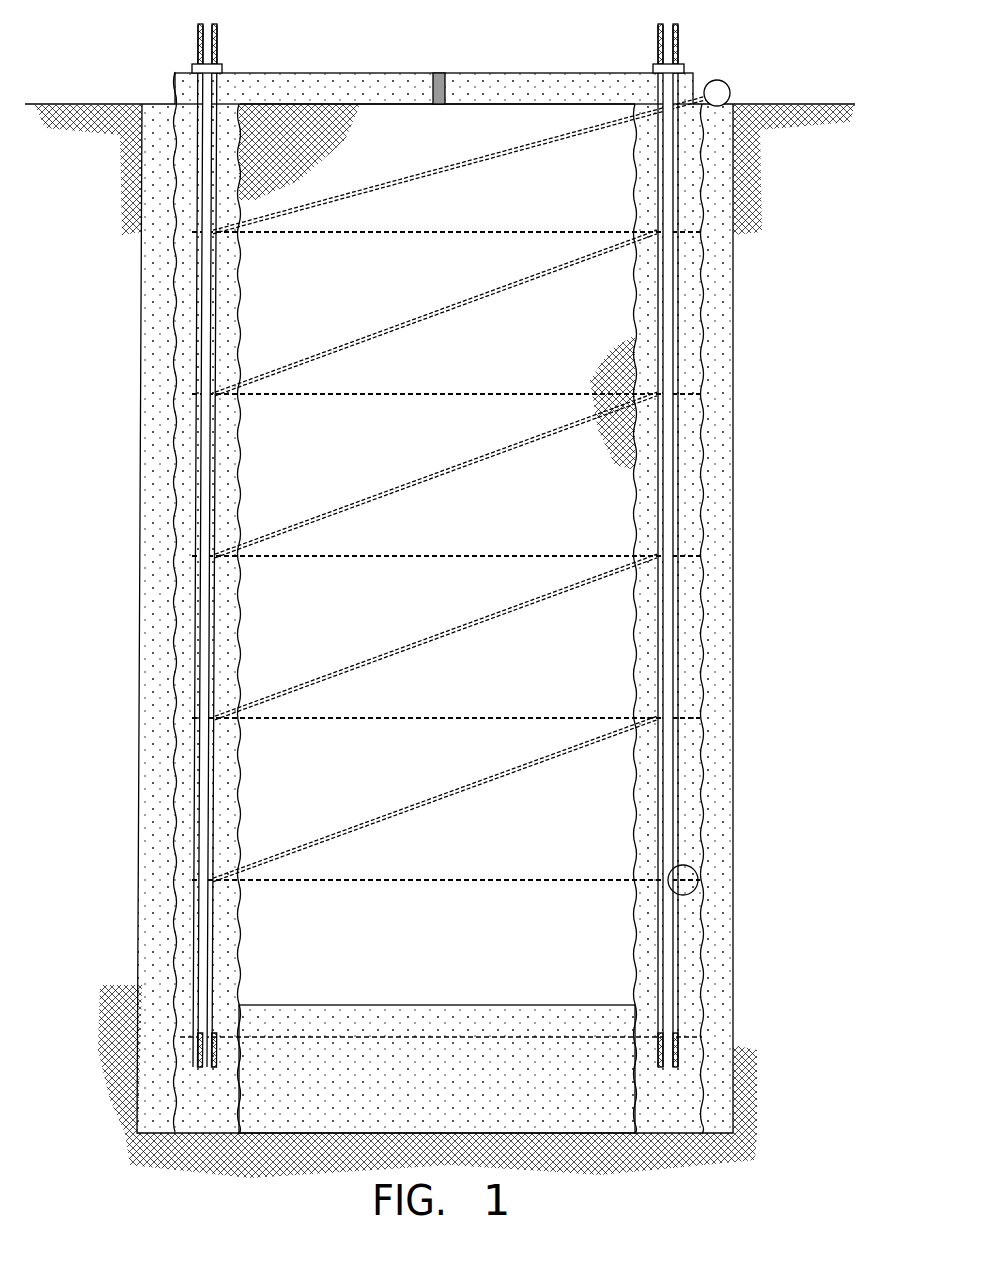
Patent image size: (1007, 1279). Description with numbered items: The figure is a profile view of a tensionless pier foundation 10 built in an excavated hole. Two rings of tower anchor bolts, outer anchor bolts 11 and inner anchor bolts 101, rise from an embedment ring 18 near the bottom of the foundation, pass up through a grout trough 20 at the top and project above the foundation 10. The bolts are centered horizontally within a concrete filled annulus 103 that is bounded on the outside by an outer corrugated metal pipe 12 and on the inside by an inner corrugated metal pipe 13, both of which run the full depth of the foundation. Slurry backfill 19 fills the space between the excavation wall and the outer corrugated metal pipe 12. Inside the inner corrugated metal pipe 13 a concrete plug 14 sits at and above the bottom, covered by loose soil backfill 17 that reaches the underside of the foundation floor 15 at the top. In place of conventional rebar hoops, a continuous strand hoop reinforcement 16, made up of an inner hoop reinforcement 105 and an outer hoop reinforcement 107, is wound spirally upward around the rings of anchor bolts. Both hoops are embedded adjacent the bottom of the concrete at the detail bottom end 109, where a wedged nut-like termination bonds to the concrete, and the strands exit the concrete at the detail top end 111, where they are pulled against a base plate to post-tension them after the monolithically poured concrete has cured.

The tensionless pier foundation 10 is at (765, 38).
The outer anchor bolts 11 is at (198, 36).
The outer corrugated metal pipe 12 is at (713, 196).
The inner corrugated metal pipe 13 is at (635, 538).
The concrete plug 14 is at (557, 1015).
The foundation floor 15 is at (497, 82).
The continuous strand hoop reinforcement 16 is at (612, 752).
The soil backfill 17 is at (452, 687).
The embedment ring 18 is at (690, 1035).
The slurry backfill 19 is at (720, 652).
The grout trough 20 is at (222, 68).
The inner anchor bolts 101 is at (218, 40).
The concrete filled annulus 103 is at (693, 282).
The inner hoop reinforcement 105 is at (532, 142).
The outer hoop reinforcement 107 is at (480, 150).
The detail bottom end 109 is at (694, 890).
The detail top end 111 is at (730, 88).